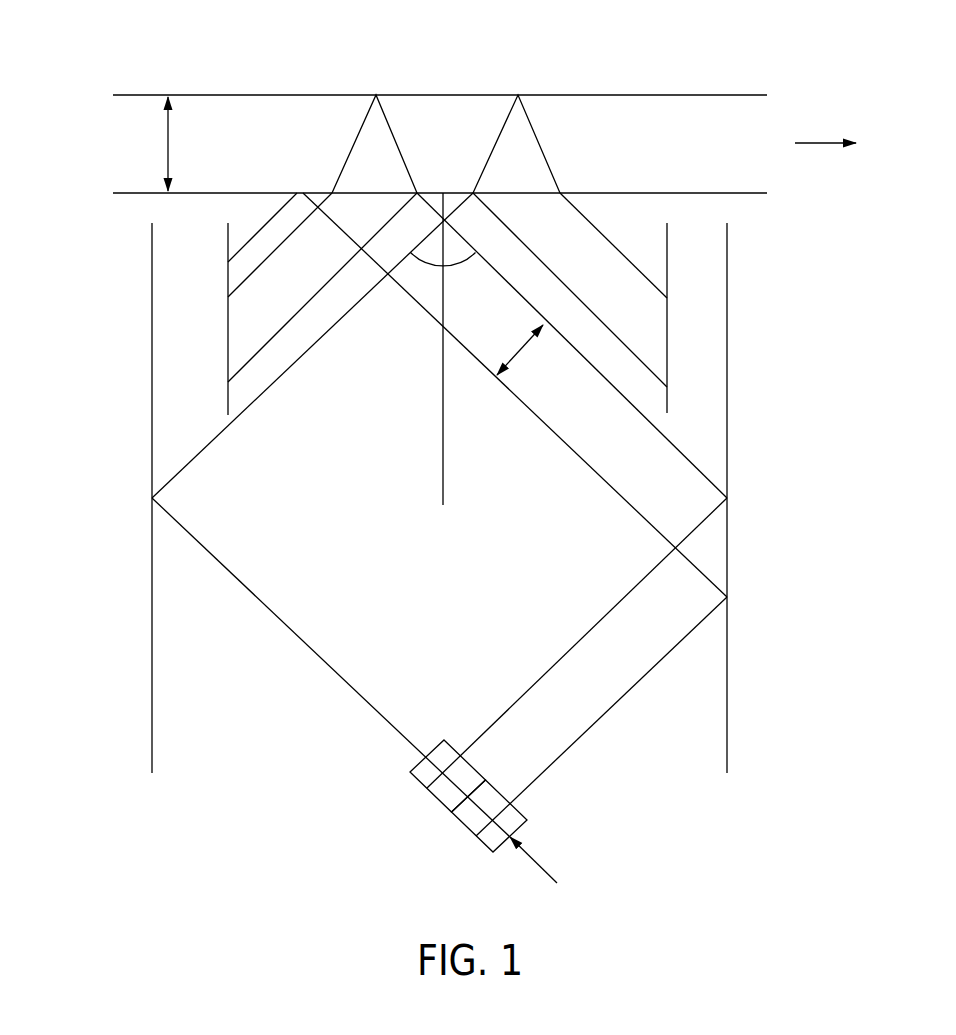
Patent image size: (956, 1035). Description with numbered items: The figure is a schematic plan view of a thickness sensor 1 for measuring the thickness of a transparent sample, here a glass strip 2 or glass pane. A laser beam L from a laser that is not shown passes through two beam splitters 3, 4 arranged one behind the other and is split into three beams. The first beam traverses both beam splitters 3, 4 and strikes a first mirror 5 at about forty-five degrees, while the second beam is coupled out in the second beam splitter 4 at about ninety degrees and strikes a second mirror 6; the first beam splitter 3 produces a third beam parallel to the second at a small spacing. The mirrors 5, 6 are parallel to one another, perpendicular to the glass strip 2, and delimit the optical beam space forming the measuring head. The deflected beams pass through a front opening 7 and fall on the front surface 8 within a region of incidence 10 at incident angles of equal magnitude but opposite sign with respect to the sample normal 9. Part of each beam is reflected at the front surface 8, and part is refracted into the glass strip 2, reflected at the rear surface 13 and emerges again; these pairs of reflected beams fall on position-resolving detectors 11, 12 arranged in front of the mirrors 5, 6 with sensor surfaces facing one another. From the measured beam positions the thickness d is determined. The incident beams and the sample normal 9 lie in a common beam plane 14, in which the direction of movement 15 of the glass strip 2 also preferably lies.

The thickness sensor 1 is at (97, 770).
The glass strip 2 is at (689, 158).
The first beam splitter 3 is at (480, 823).
The second beam splitter 4 is at (440, 787).
The first mirror 5 is at (152, 668).
The second mirror 6 is at (727, 677).
The front opening 7 is at (743, 222).
The front surface 8 is at (128, 197).
The sample normal 9 is at (443, 485).
The region of incidence 10 is at (288, 85).
The first detector 11 is at (228, 332).
The second detector 12 is at (667, 332).
The rear surface 13 is at (133, 97).
The beam plane 14 is at (315, 487).
The direction of movement 15 is at (817, 143).